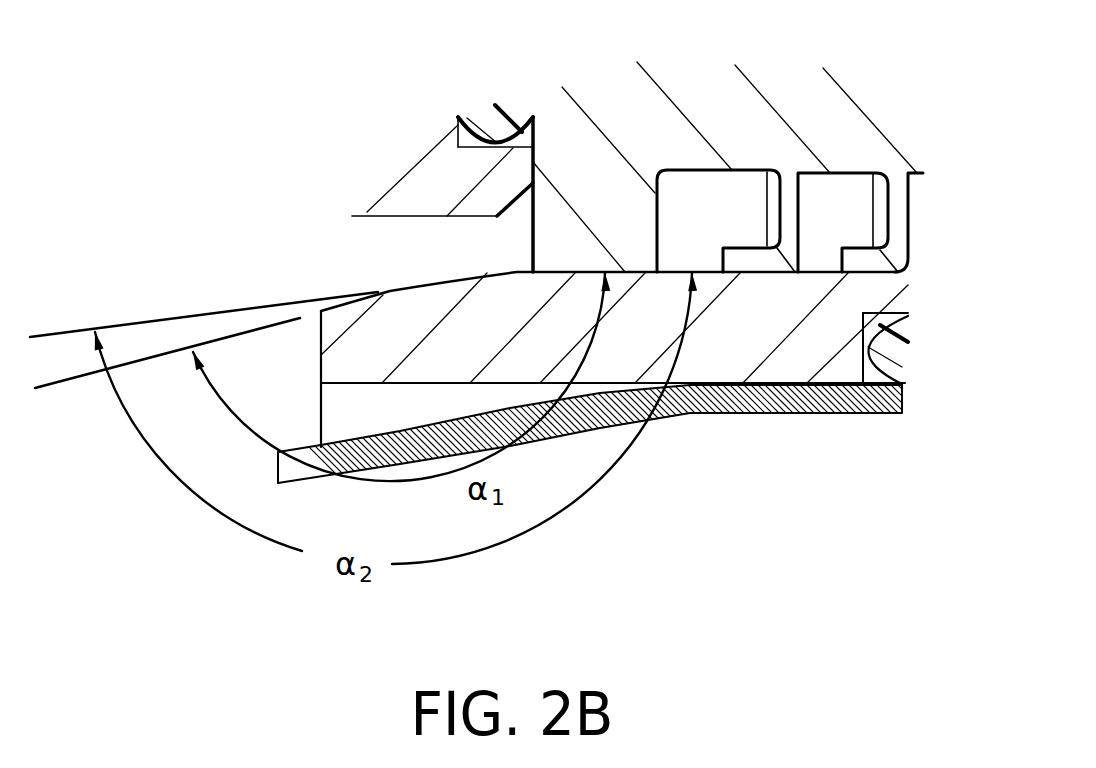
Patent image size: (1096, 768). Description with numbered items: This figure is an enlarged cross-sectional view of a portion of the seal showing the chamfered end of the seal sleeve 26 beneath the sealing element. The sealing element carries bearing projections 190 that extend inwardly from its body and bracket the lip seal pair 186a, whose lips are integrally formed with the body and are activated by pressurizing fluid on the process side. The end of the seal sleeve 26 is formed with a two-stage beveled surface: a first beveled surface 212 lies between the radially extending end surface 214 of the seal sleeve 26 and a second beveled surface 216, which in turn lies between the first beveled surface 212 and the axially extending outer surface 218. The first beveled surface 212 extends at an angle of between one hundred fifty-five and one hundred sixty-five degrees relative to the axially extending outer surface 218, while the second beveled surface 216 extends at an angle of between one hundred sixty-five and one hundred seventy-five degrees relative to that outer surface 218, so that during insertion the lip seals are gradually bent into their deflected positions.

The seal sleeve 26 is at (840, 414).
The lip seal pair 186a is at (848, 273).
The bearing projections 190 is at (580, 240).
The first beveled surface 212 is at (327, 297).
The radially extending end surface 214 is at (318, 343).
The second beveled surface 216 is at (443, 280).
The axially extending outer surface 218 is at (673, 272).